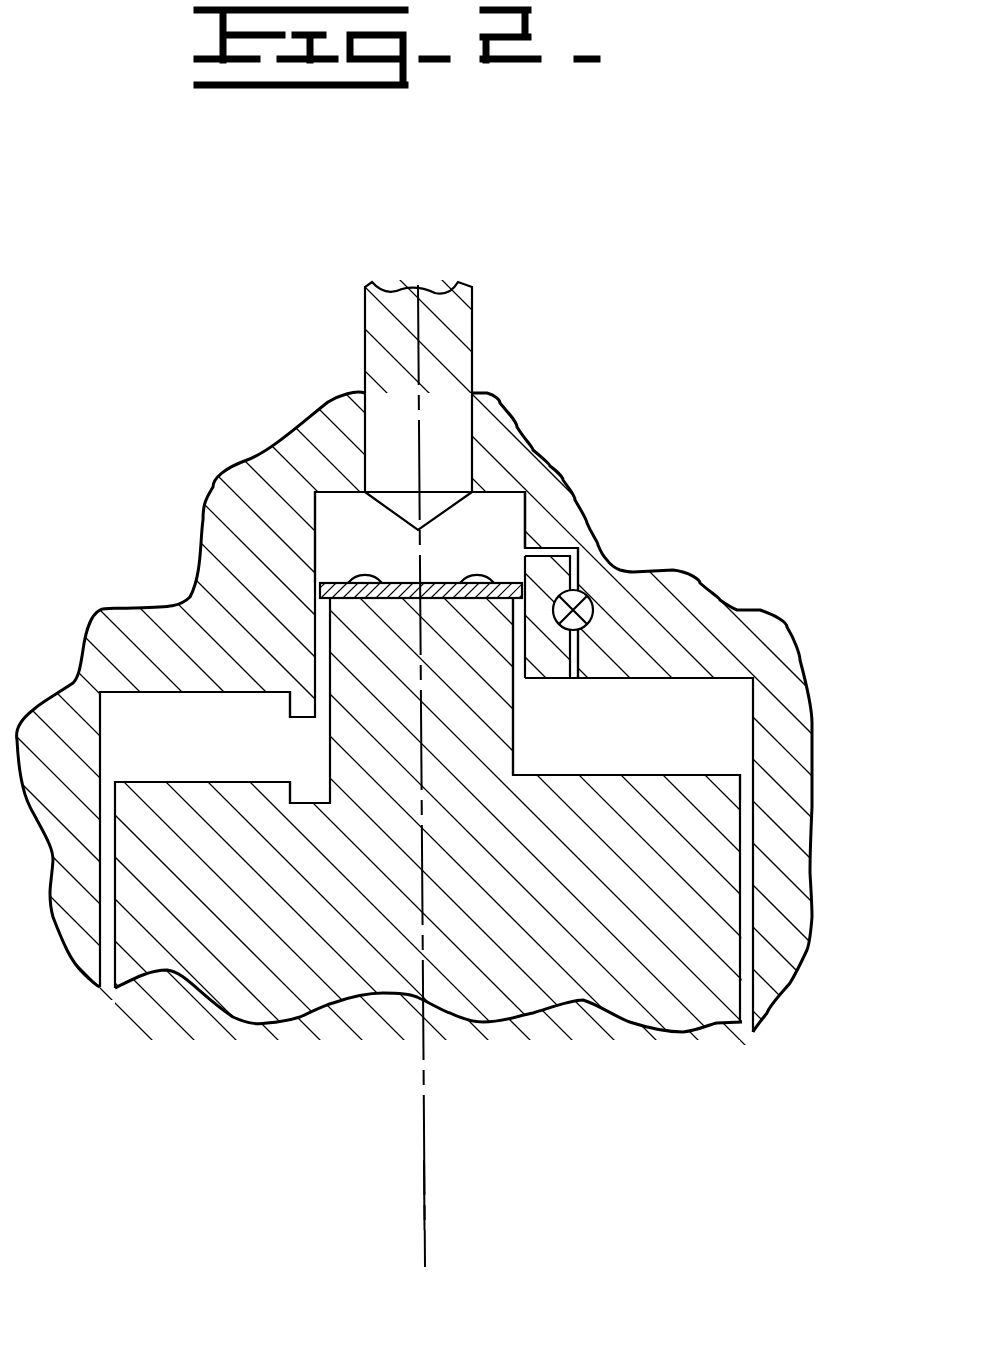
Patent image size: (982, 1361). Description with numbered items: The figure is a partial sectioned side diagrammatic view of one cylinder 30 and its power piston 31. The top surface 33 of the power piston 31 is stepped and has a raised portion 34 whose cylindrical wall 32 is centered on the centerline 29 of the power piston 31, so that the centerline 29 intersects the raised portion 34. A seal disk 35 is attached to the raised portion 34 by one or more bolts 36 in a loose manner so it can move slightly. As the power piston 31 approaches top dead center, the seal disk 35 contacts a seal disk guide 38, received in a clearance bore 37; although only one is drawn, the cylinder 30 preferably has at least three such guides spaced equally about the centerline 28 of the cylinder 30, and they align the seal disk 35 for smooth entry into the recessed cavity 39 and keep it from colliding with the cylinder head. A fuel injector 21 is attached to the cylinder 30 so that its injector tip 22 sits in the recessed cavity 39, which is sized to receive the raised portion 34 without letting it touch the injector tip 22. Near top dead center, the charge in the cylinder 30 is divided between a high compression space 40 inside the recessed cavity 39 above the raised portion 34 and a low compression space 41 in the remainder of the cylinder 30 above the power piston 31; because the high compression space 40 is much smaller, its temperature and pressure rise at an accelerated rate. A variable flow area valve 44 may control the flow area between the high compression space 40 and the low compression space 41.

The fuel injector 21 is at (472, 342).
The injector tip 22 is at (388, 508).
The centerline of cylinder 28 is at (425, 1225).
The centerline of power piston 29 is at (423, 1180).
The cylinder 30 is at (760, 722).
The power piston 31 is at (742, 858).
The cylindrical wall 32 is at (513, 765).
The top surface 33 is at (690, 773).
The raised portion 34 is at (513, 728).
The seal disk 35 is at (500, 575).
The bolt 36 is at (366, 573).
The clearance bore 37 is at (292, 785).
The seal disk guide 38 is at (292, 695).
The recessed cavity 39 is at (512, 525).
The high compression space 40 is at (378, 556).
The low compression space 41 is at (144, 736).
The variable flow area valve 44 is at (590, 598).